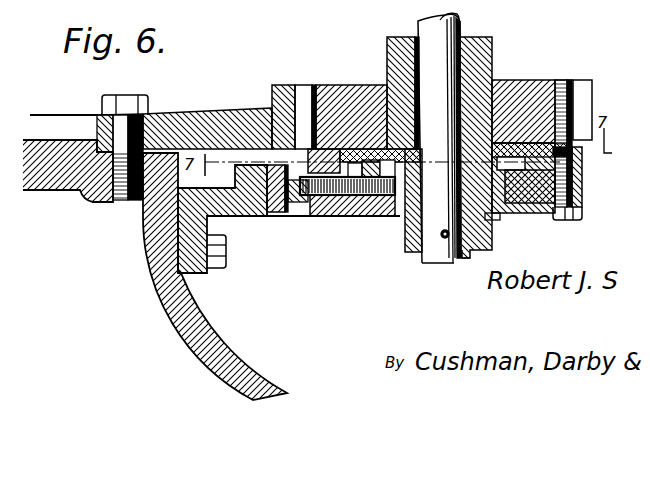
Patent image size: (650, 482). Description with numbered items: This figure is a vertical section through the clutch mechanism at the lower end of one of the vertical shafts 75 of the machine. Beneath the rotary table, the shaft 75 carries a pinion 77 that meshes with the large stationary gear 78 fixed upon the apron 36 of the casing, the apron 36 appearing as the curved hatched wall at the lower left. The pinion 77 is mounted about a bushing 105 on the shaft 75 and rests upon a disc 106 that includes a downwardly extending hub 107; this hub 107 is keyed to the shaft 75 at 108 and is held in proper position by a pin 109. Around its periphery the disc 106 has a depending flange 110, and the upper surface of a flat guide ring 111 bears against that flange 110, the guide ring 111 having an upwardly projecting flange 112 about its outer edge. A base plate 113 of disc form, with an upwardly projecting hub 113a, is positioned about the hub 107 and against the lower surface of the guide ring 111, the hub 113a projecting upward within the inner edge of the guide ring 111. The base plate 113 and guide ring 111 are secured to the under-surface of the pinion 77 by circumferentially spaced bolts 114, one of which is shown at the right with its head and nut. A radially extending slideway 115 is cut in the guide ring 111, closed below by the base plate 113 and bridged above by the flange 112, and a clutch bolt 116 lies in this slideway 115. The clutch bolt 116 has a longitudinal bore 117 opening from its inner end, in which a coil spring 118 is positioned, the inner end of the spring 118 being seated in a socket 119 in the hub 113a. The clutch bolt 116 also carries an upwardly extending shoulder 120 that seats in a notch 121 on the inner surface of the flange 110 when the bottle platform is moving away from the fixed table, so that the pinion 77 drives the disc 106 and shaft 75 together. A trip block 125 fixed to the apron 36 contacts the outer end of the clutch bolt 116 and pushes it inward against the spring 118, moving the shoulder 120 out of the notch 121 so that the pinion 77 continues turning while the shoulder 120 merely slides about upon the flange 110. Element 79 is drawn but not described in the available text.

The apron-like covering 36 is at (231, 345).
The shaft 75 is at (493, 50).
The pinion 77 is at (590, 84).
The large stationary gear 78 is at (182, 112).
The housing body 79 is at (523, 207).
The bushing 105 is at (443, 75).
The disc 106 is at (498, 125).
The hub 107 is at (483, 226).
The key 108 is at (482, 249).
The pin 109 is at (444, 239).
The depending flange 110 is at (574, 153).
The flat guide ring 111 is at (545, 185).
The upwardly projecting flange 112 is at (583, 160).
The base plate 113 is at (583, 205).
The upwardly projecting hub 113a is at (540, 98).
The bolts 114 is at (583, 102).
The slideway 115 is at (297, 216).
The clutch bolt 116 is at (270, 217).
The longitudinal bore 117 is at (349, 158).
The coil spring 118 is at (336, 219).
The socket 119 is at (400, 216).
The shoulder 120 is at (378, 147).
The notch 121 is at (356, 158).
The trip block 125 is at (266, 147).